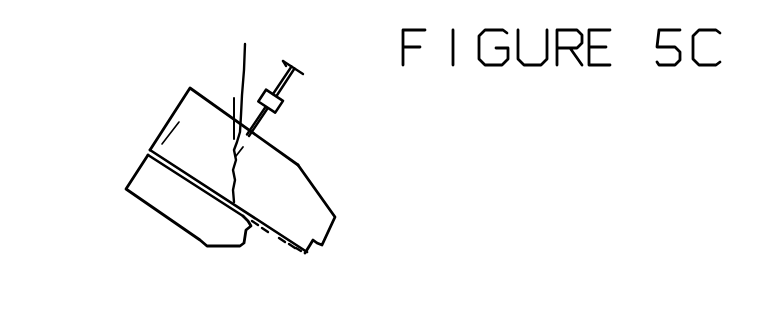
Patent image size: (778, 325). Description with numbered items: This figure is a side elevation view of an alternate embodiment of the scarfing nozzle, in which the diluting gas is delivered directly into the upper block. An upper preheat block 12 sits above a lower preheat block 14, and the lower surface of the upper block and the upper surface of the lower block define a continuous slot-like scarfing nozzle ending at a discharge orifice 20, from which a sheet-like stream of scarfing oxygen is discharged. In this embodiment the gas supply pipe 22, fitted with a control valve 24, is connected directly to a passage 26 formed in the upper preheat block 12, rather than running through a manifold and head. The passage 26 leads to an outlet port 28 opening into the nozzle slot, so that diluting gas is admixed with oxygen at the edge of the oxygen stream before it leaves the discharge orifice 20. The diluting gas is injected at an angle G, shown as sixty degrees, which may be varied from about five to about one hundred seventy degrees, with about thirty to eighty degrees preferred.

The upper preheat block 12 is at (177, 104).
The lower preheat block 14 is at (140, 165).
The discharge orifice 20 is at (276, 235).
The gas supply pipe 22 is at (257, 137).
The control valve 24 is at (283, 105).
The passage 26 is at (245, 44).
The outlet port 28 is at (234, 202).
The angle of injecting diluting gas G is at (227, 113).